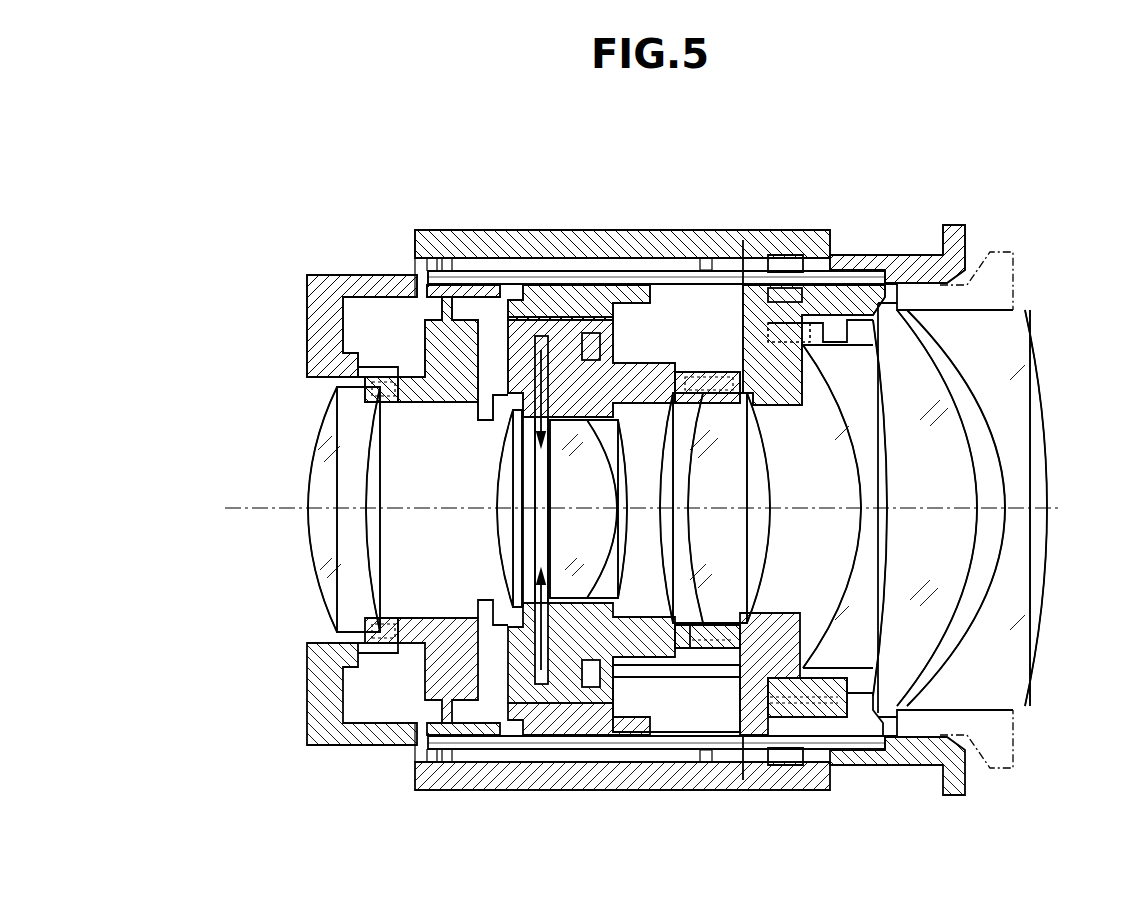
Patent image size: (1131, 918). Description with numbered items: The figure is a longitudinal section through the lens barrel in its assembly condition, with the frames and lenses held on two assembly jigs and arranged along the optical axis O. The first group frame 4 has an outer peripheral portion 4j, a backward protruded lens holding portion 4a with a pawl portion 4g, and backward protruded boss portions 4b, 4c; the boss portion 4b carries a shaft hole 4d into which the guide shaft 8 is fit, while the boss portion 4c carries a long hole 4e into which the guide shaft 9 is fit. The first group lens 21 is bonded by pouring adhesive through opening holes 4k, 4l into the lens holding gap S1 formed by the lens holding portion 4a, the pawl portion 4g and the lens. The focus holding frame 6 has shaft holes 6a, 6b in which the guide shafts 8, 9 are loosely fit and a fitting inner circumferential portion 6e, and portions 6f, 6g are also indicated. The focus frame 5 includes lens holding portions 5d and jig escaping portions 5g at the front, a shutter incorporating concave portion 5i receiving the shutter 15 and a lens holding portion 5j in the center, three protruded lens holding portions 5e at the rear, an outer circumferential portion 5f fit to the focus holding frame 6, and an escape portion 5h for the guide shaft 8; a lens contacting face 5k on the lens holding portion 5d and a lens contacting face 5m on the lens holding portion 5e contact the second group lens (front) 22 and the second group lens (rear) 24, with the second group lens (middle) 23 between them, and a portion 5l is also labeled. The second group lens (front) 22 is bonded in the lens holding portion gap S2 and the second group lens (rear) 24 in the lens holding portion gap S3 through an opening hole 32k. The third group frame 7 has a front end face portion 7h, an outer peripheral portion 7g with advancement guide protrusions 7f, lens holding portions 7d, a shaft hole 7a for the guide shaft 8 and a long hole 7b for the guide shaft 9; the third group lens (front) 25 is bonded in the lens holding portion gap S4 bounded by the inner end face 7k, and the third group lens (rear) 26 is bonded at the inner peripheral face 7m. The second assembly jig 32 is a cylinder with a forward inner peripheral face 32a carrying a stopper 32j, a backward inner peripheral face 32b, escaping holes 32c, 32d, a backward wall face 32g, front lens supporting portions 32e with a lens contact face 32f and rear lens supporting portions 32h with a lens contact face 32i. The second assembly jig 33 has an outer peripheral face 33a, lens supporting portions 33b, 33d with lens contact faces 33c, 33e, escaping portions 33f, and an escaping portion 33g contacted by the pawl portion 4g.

The first group frame 4 is at (318, 300).
The lens holding portion 4a is at (322, 283).
The boss portion 4b is at (490, 290).
The boss portion 4c is at (470, 777).
The shaft hole 4d is at (523, 250).
The long hole 4e is at (495, 782).
The pawl portion 4g is at (395, 632).
The outer peripheral portion 4j is at (405, 330).
The opening hole 4k is at (338, 745).
The opening hole 4l is at (368, 640).
The focus frame 5 is at (627, 363).
The lens holding portion 5d is at (405, 760).
The lens holding portion 5e is at (718, 737).
The outer circumferential portion 5f is at (655, 320).
The jig escaping portion 5g is at (490, 397).
The escape portion 5h is at (565, 300).
The shutter incorporating concave portion 5i is at (440, 770).
The lens holding portion 5j is at (545, 790).
The lens contacting face 5k is at (505, 480).
The frame lens seat 5l is at (690, 615).
The lens contacting face 5m is at (690, 345).
The focus holding frame 6 is at (672, 295).
The shaft hole 6a is at (590, 290).
The shaft hole 6b is at (575, 772).
The fitting inner circumferential portion 6e is at (605, 300).
The frame portion 6f is at (640, 295).
The frame portion 6g is at (600, 782).
The third group frame 7 is at (903, 270).
The shaft hole 7a is at (870, 290).
The long hole 7b is at (905, 767).
The lens holding portion 7d is at (805, 350).
The advancement guide protrusion 7f is at (968, 222).
The outer peripheral portion 7g is at (960, 230).
The front end face portion 7h is at (830, 745).
The inner end face 7k is at (828, 344).
The inner peripheral face 7m is at (915, 735).
The guide shaft 8 is at (724, 300).
The guide shaft 9 is at (700, 772).
The shutter 15 is at (540, 740).
The first group lens 21 is at (320, 530).
The second group lens (front) 22 is at (505, 525).
The second group lens (middle) 23 is at (640, 762).
The second group lens (rear) 24 is at (765, 540).
The third group lens (front) 25 is at (945, 610).
The third group lens (rear) 26 is at (1015, 670).
The second assembly jig 32 is at (793, 272).
The forward inner peripheral face 32a is at (462, 262).
The backward inner peripheral face 32b is at (838, 290).
The escaping hole 32c is at (750, 262).
The escaping hole 32d is at (790, 718).
The lens supporting portion 32e is at (743, 285).
The lens contact face 32f is at (775, 270).
The backward wall face 32g is at (740, 772).
The lens supporting portion 32h is at (808, 335).
The lens contact face 32i is at (805, 402).
The stopper 32j is at (630, 772).
The opening hole 32k is at (668, 772).
The second assembly jig 33 is at (372, 365).
The outer peripheral face 33a is at (478, 300).
The lens supporting portion 33b is at (368, 390).
The lens contact face 33c is at (368, 400).
The lens supporting portion 33d is at (505, 448).
The lens contact face 33e is at (500, 420).
The escaping portion 33f is at (437, 360).
The escaping portion 33g is at (370, 618).
The optical axis O is at (230, 500).
The lens holding gap S1 is at (375, 640).
The lens holding portion gap S2 is at (505, 600).
The lens holding portion gap S3 is at (676, 694).
The lens holding portion gap S4 is at (845, 708).